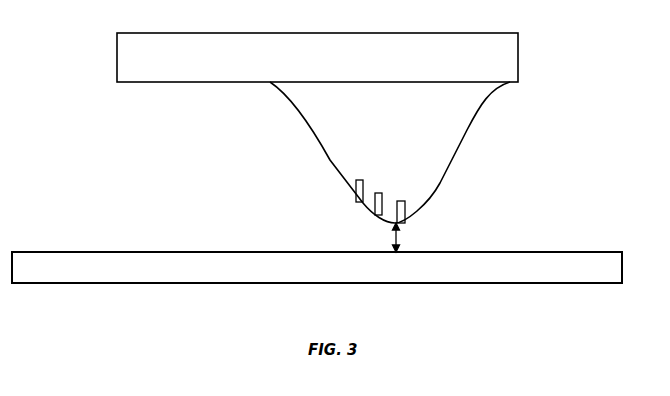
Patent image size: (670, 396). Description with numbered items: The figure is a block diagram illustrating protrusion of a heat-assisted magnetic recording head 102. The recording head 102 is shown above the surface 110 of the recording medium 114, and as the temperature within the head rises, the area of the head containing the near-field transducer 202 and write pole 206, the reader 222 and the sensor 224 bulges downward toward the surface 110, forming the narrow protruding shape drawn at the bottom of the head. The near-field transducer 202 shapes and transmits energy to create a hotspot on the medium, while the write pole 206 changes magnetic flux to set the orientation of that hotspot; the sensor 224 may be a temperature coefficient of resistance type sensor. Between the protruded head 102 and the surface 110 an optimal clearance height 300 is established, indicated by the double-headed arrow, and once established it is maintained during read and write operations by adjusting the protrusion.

The recording head 102 is at (482, 57).
The surface 110 is at (553, 251).
The region 114 is at (333, 277).
The near-field transducer 202 is at (405, 222).
The magnetic write pole 206 is at (405, 222).
The reader 222 is at (357, 180).
The sensor 224 is at (375, 204).
The clearance height 300 is at (422, 237).